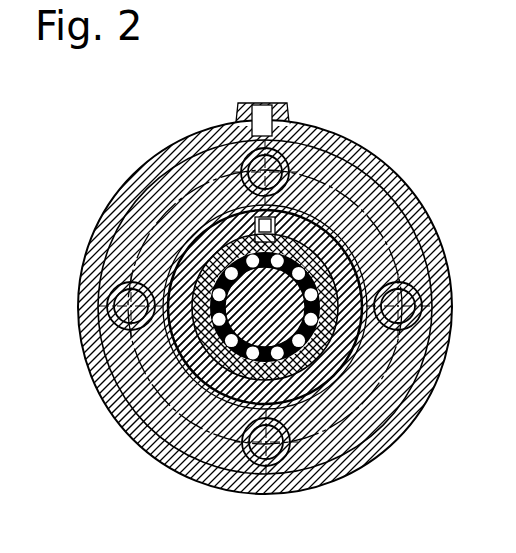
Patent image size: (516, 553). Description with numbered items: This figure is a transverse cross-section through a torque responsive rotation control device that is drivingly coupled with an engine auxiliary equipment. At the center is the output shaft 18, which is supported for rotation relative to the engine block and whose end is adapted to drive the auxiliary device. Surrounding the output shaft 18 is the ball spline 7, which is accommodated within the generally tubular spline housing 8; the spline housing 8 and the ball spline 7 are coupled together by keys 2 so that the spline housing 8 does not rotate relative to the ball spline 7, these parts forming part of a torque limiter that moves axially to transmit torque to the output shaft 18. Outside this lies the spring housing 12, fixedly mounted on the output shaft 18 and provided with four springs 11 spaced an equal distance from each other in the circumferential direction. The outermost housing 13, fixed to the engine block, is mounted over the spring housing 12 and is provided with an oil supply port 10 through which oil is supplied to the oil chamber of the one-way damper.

The keys 2 is at (307, 207).
The ball spline 7 is at (310, 377).
The spline housing 8 is at (350, 342).
The oil supply port 10 is at (265, 112).
The springs 11 is at (288, 162).
The spring housing 12 is at (135, 393).
The housing 13 is at (188, 143).
The output shaft 18 is at (218, 400).